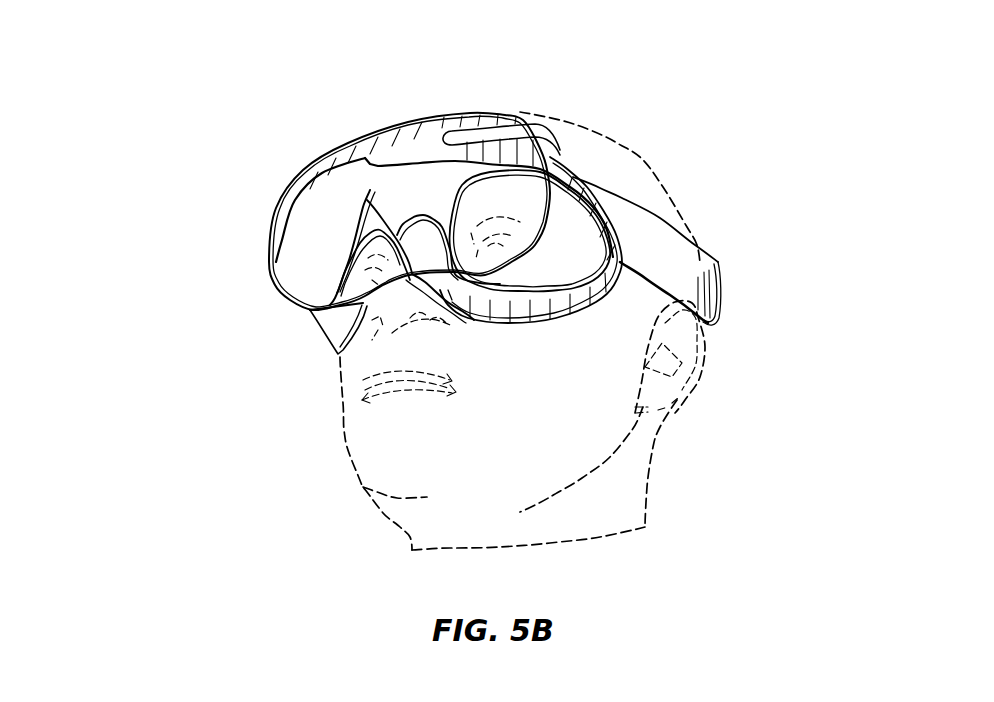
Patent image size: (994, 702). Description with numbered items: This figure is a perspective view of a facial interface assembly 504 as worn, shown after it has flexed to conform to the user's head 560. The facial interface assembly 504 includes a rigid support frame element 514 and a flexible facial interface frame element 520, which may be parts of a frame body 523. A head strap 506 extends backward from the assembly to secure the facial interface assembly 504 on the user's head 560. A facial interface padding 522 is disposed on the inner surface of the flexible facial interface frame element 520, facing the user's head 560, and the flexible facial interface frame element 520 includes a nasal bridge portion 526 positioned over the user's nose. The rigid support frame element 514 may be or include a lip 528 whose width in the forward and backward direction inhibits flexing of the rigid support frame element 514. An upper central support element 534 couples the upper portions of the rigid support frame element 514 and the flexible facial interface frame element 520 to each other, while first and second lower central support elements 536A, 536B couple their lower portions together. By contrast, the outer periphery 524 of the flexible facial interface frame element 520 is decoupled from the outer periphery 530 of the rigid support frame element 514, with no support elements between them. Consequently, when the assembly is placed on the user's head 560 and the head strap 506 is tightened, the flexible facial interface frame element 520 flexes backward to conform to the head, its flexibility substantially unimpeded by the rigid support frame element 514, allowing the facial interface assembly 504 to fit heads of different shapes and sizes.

The facial interface assembly 504 is at (150, 118).
The rigid support frame element 514 is at (518, 122).
The upper central support element 534 is at (413, 150).
The lip 528 is at (282, 225).
The nasal bridge portion 526 is at (413, 245).
The outer periphery of the rigid support frame element 530 is at (250, 268).
The frame body 523 is at (210, 254).
The facial interface padding 522 is at (528, 323).
The first lower central support element 536A is at (320, 320).
The second lower central support element 536B is at (474, 320).
The flexible facial interface frame element 520 is at (577, 177).
The outer periphery of the flexible facial interface frame element 524 is at (638, 235).
The head strap 506 is at (700, 250).
The user's head 560 is at (308, 460).